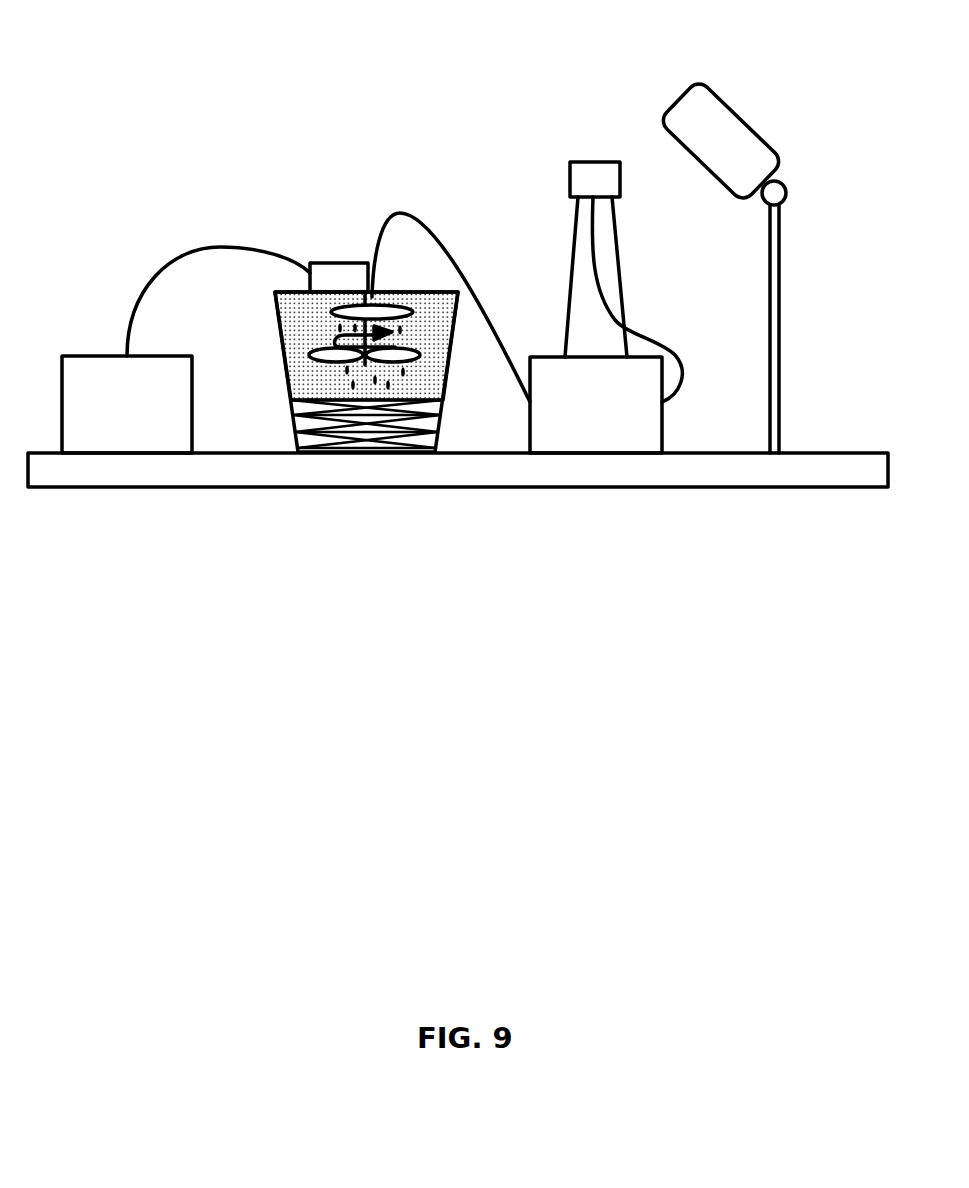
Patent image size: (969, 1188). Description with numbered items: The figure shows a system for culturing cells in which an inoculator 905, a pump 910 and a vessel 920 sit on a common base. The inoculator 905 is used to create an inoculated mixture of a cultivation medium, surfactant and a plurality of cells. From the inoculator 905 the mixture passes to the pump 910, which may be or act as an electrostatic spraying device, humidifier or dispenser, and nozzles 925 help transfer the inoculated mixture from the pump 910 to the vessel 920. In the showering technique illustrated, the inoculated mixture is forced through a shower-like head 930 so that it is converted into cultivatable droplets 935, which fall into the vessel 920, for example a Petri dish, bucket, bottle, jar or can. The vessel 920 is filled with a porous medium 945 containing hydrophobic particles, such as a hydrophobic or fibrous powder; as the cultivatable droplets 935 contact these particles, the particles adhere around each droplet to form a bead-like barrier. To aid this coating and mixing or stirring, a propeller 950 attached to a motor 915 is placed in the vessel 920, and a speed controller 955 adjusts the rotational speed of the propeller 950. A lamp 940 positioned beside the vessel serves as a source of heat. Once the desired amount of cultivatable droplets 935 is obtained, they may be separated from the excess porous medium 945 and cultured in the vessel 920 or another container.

The inoculator 905 is at (578, 158).
The pump 910 is at (596, 405).
The motor 915 is at (247, 301).
The vessel 920 is at (287, 372).
The nozzles 925 is at (400, 213).
The shower-like head 930 is at (413, 310).
The cultivatable droplets 935 is at (414, 331).
The lamp 940 is at (710, 80).
The porous medium 945 is at (318, 390).
The propeller 950 is at (305, 353).
The speed controller 955 is at (127, 404).